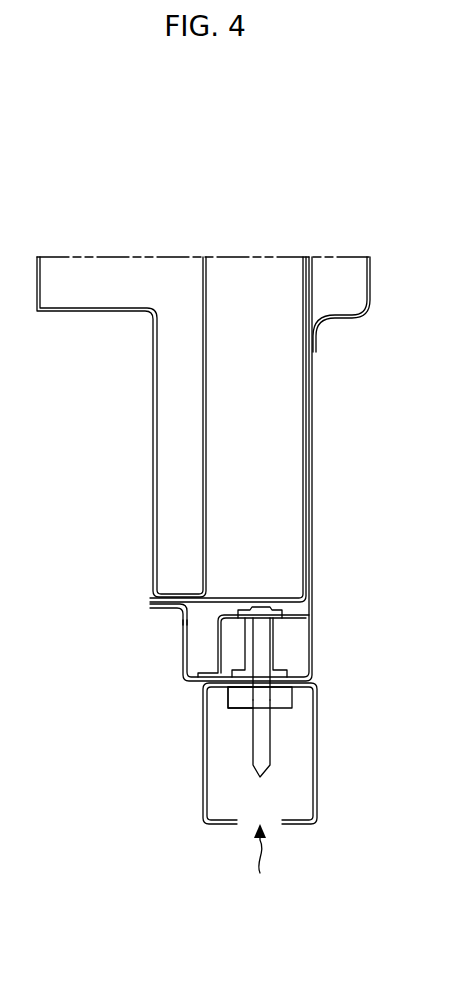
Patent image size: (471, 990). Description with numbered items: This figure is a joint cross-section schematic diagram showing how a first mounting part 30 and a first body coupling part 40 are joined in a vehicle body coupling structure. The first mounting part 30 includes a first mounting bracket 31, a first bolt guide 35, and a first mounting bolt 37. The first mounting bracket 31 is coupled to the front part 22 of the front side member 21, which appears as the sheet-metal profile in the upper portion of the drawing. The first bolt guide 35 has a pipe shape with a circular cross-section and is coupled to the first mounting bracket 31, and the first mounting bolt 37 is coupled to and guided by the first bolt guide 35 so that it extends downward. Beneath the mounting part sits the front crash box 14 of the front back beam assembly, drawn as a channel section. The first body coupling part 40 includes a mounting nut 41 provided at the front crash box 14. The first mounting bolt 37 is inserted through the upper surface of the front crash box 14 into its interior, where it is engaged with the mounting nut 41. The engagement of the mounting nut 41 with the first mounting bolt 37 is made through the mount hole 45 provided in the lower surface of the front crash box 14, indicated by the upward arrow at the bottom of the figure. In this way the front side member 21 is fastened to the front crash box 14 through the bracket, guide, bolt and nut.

The front crash box 14 is at (317, 800).
The front side member 21 is at (326, 651).
The front part 22 is at (309, 606).
The first mounting part 30 is at (205, 626).
The first mounting bracket 31 is at (220, 663).
The first bolt guide 35 is at (272, 644).
The first mounting bolt 37 is at (258, 755).
The first body coupling part 40 is at (304, 704).
The mounting nut 41 is at (237, 697).
The mount hole 45 is at (256, 863).